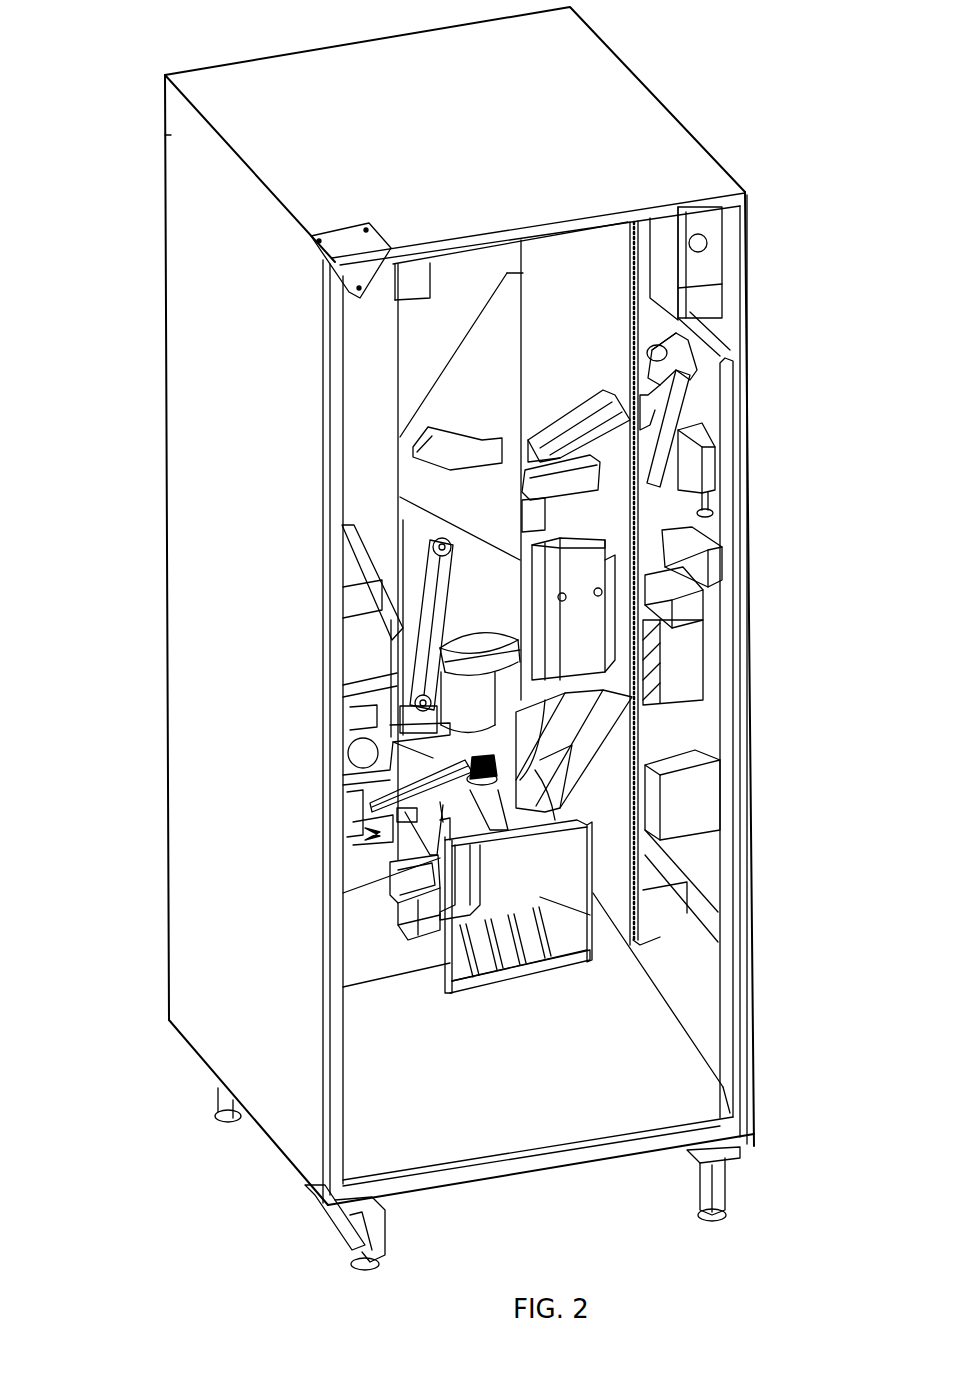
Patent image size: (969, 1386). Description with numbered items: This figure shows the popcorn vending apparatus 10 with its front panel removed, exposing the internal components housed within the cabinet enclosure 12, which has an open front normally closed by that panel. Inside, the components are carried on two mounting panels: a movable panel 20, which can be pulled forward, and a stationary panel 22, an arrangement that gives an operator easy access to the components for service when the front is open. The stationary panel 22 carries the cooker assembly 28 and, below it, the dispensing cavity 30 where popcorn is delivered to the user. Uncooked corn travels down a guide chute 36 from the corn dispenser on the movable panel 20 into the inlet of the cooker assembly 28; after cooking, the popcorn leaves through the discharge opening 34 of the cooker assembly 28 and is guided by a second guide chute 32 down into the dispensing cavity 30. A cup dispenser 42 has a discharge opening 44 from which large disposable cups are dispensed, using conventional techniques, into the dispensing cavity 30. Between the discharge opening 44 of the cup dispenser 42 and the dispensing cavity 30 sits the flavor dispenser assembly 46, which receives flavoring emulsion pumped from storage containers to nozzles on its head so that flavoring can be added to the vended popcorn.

The popcorn vending apparatus 10 is at (640, 78).
The cabinet enclosure 12 is at (165, 134).
The movable panel 20 is at (737, 397).
The stationary panel 22 is at (637, 528).
The cooker assembly 28 is at (608, 625).
The dispensing cavity 30 is at (570, 925).
The guide chute 32 is at (605, 735).
The discharge opening 34 is at (603, 512).
The guide chute 36 is at (585, 390).
The cup dispenser 42 is at (402, 553).
The discharge opening 44 is at (430, 745).
The flavor dispenser assembly 46 is at (355, 793).